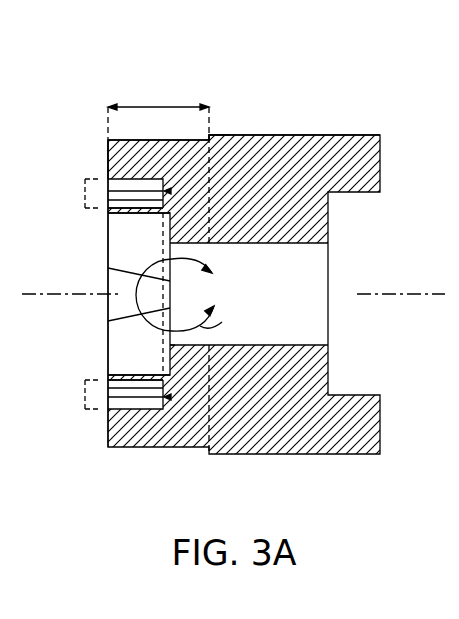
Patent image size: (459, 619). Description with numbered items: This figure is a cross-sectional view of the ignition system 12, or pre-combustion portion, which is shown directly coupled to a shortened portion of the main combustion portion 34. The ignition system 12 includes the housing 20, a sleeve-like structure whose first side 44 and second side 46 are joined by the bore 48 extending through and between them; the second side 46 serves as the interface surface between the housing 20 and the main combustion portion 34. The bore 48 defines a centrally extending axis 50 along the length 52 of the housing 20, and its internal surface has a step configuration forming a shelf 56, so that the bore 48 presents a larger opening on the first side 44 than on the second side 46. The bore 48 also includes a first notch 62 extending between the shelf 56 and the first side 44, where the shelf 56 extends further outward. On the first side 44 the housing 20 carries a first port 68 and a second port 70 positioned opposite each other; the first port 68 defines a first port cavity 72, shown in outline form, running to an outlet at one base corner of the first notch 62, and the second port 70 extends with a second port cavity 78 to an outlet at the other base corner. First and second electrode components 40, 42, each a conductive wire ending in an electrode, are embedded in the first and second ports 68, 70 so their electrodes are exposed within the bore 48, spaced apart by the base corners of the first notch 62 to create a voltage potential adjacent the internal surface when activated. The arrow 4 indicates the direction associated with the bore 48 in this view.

The flow direction arrow 4 is at (222, 322).
The ignition system 12 is at (84, 93).
The housing 20 is at (131, 452).
The main combustion portion 34 is at (362, 455).
The first electrode component 40 is at (86, 181).
The second electrode component 42 is at (86, 399).
The first side 44 is at (108, 162).
The second side 46 is at (210, 160).
The bore 48 is at (296, 277).
The axis 50 is at (32, 297).
The length 52 is at (182, 104).
The shelf 56 is at (167, 235).
The first notch 62 is at (108, 321).
The first port 68 is at (112, 202).
The second port 70 is at (110, 402).
The first port cavity 72 is at (167, 251).
The second port cavity 78 is at (166, 345).